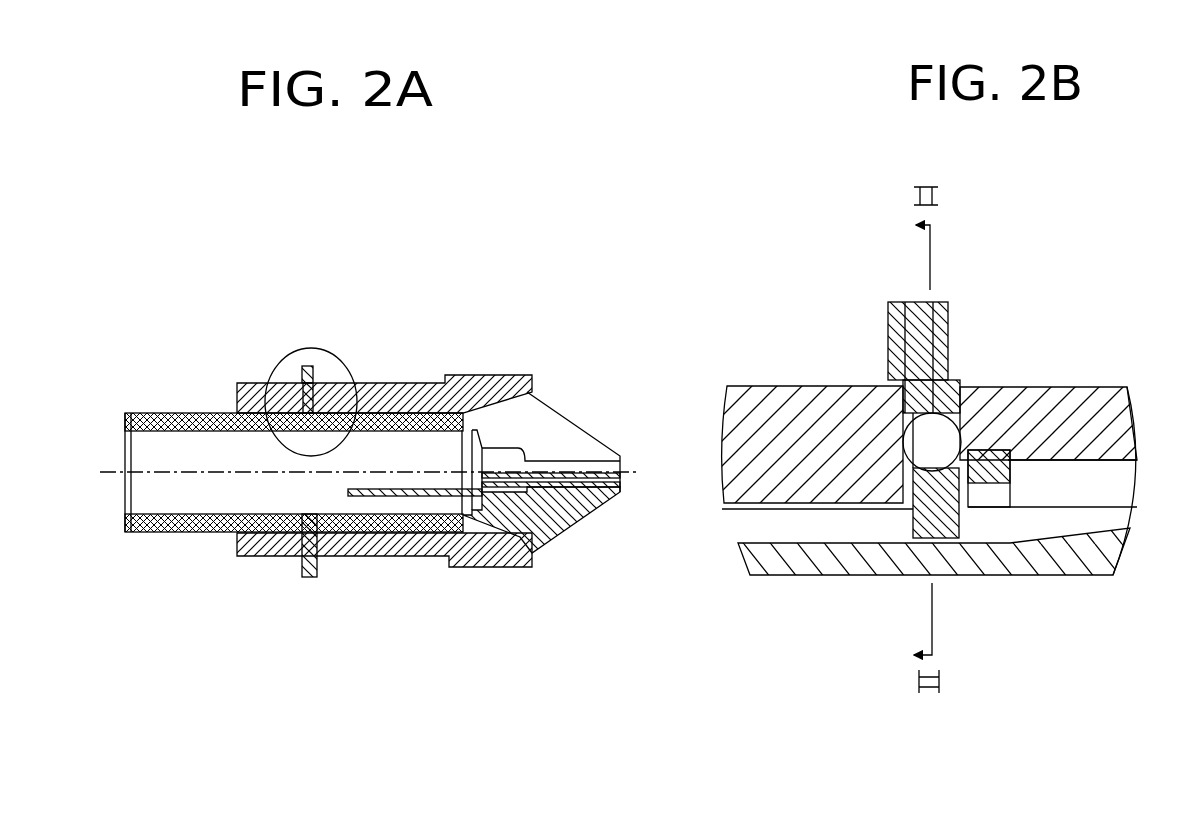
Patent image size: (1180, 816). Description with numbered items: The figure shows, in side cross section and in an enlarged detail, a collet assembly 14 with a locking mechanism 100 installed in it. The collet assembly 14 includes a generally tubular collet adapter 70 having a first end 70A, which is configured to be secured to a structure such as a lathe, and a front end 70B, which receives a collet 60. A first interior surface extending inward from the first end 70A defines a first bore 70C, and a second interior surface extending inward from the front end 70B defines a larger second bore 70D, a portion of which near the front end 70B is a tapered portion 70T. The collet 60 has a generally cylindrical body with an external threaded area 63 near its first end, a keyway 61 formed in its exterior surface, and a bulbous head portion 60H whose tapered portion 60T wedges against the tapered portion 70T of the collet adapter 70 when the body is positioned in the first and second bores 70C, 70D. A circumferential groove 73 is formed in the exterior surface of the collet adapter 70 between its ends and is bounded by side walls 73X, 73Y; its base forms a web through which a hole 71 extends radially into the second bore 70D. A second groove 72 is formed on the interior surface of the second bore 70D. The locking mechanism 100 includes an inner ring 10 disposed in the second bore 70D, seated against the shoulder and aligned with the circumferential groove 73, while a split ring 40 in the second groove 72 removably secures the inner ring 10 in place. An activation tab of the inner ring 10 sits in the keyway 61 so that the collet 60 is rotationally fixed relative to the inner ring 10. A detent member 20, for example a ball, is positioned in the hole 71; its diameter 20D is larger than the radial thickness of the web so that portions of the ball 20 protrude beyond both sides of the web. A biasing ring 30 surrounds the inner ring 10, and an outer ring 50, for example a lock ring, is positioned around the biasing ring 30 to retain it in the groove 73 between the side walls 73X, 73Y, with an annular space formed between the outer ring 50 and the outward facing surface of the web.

In FIG. 2A, the inner ring 10 is at (300, 440).
In FIG. 2B, the inner ring 10 is at (990, 575).
In FIG. 2A, the collet assembly 14 is at (370, 640).
In FIG. 2B, the collet assembly 14 is at (822, 644).
In FIG. 2B, the detent member 20 is at (880, 543).
In FIG. 2B, the diameter 20D is at (862, 543).
In FIG. 2B, the biasing ring 30 is at (978, 450).
In FIG. 2A, the split ring 40 is at (335, 405).
In FIG. 2B, the split ring 40 is at (985, 450).
In FIG. 2A, the outer ring 50 is at (313, 372).
In FIG. 2B, the outer ring 50 is at (952, 338).
In FIG. 2A, the collet 60 is at (281, 558).
In FIG. 2B, the collet 60 is at (1083, 575).
In FIG. 2A, the head portion 60H is at (580, 532).
In FIG. 2A, the tapered portion 60T is at (497, 372).
In FIG. 2A, the keyway 61 is at (155, 413).
In FIG. 2B, the keyway 61 is at (760, 520).
In FIG. 2A, the threaded area 63 is at (181, 533).
In FIG. 2A, the collet adapter 70 is at (467, 375).
In FIG. 2B, the collet adapter 70 is at (780, 403).
In FIG. 2A, the first end 70A is at (232, 390).
In FIG. 2A, the front end 70B is at (540, 567).
In FIG. 2A, the first bore 70C is at (232, 542).
In FIG. 2A, the second bore 70D is at (473, 567).
In FIG. 2A, the tapered portion 70T is at (558, 556).
In FIG. 2B, the hole 71 is at (960, 440).
In FIG. 2B, the second groove 72 is at (993, 443).
In FIG. 2B, the circumferential groove 73 is at (902, 303).
In FIG. 2B, the side wall 73X is at (965, 395).
In FIG. 2B, the side wall 73Y is at (897, 375).
In FIG. 2A, the locking mechanism 100 is at (295, 372).
In FIG. 2B, the locking mechanism 100 is at (882, 290).